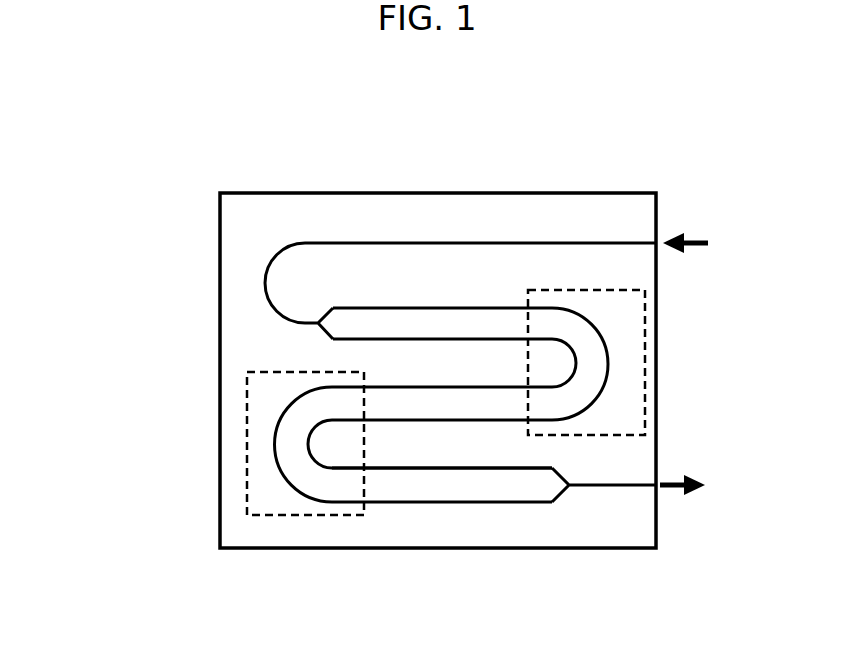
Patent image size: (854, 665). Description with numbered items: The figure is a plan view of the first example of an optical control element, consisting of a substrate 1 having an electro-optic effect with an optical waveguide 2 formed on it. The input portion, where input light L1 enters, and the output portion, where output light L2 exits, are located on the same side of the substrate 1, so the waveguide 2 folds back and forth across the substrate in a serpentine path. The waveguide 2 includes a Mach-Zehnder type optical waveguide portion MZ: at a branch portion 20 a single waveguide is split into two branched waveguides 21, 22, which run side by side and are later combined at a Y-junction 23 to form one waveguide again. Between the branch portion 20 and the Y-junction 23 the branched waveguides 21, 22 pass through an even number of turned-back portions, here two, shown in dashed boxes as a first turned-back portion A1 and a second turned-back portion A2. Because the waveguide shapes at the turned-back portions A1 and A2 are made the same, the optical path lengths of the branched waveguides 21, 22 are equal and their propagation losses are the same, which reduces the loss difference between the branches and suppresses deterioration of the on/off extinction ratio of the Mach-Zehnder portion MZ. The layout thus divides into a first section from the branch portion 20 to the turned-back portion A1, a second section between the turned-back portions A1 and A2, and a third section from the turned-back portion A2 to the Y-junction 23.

The substrate 1 is at (547, 193).
The optical waveguide 2 is at (393, 365).
The branch portion 20 is at (318, 323).
The branched waveguide 21 is at (373, 308).
The branched waveguide 22 is at (455, 339).
The Y-junction 23 is at (566, 486).
The Mach-Zehnder type optical waveguide portion MZ is at (459, 512).
The turned-back portion A1 is at (586, 348).
The turned-back portion A2 is at (305, 430).
The input light L1 is at (704, 244).
The output light L2 is at (703, 486).